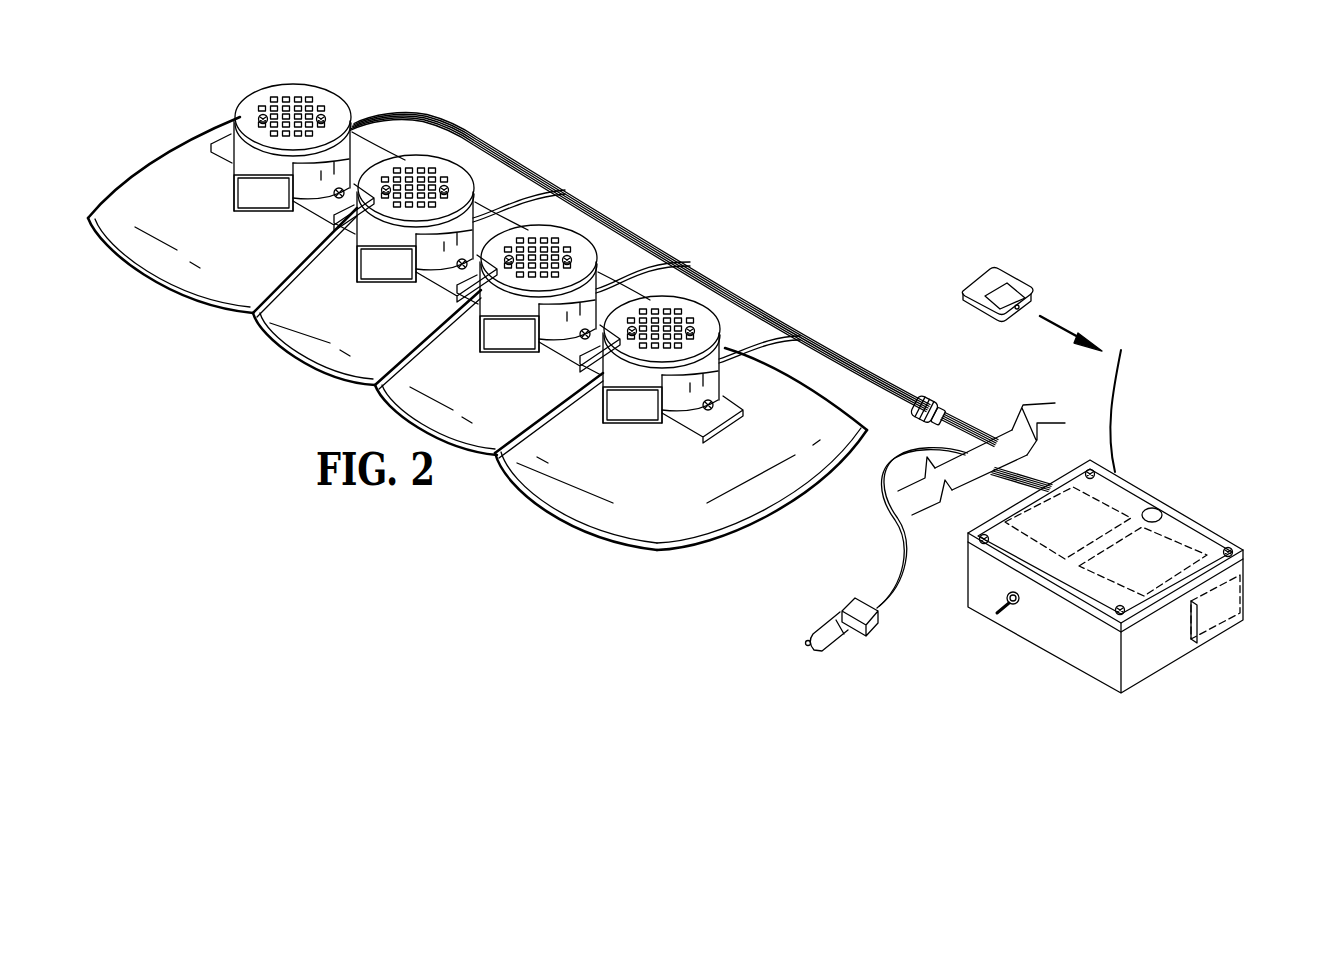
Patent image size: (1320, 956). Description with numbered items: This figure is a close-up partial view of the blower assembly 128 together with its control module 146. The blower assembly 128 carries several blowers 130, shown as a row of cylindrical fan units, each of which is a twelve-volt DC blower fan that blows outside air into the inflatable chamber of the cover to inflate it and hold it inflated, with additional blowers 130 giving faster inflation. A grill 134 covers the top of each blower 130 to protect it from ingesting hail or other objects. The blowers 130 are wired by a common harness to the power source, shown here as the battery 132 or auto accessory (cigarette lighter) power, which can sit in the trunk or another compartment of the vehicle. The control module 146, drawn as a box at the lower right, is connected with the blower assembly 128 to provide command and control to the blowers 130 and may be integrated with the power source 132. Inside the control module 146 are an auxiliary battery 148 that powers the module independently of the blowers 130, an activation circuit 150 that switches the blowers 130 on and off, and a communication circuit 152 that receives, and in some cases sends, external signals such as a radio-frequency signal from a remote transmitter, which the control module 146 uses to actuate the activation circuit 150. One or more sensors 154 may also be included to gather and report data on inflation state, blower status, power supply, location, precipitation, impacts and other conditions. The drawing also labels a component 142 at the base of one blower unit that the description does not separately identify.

The blower assembly 128 is at (825, 128).
The blower 130 is at (268, 88).
The battery 132 is at (842, 646).
The grill 134 is at (299, 98).
The mounting base plate 142 is at (723, 373).
The control module 146 is at (1141, 562).
The auxiliary battery 148 is at (1221, 608).
The activation circuit 150 is at (1175, 562).
The communication circuit 152 is at (1105, 520).
The sensor 154 is at (1152, 508).